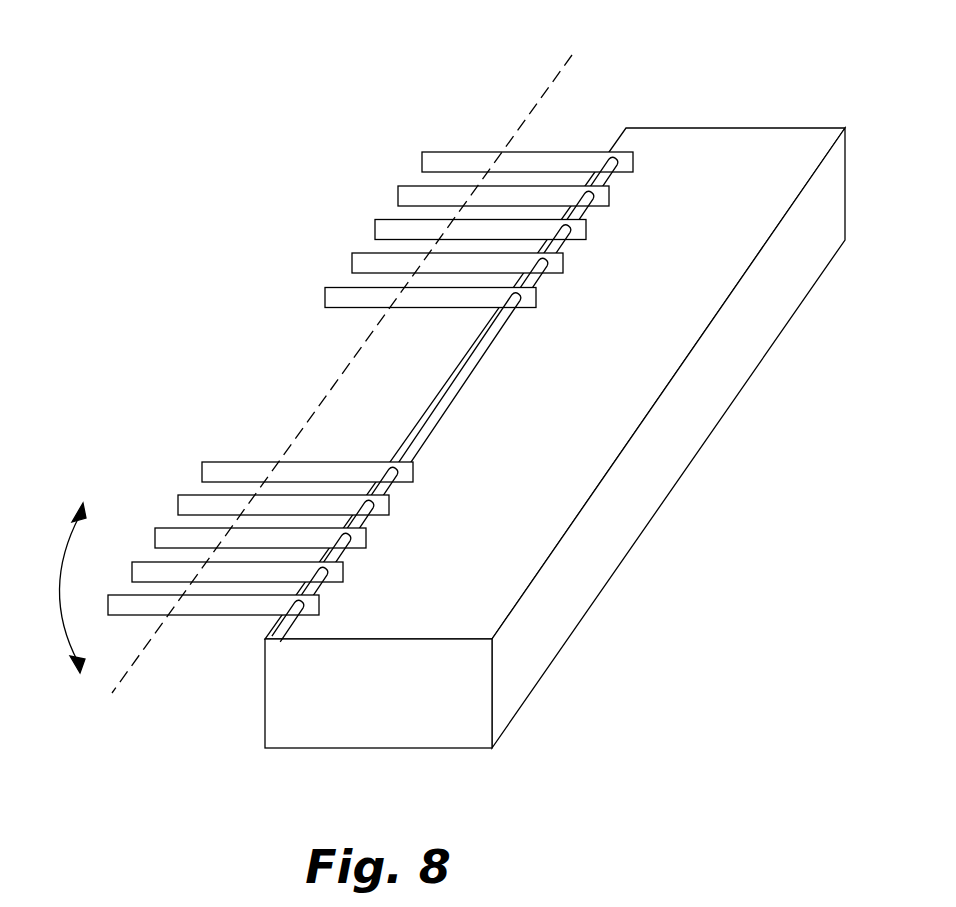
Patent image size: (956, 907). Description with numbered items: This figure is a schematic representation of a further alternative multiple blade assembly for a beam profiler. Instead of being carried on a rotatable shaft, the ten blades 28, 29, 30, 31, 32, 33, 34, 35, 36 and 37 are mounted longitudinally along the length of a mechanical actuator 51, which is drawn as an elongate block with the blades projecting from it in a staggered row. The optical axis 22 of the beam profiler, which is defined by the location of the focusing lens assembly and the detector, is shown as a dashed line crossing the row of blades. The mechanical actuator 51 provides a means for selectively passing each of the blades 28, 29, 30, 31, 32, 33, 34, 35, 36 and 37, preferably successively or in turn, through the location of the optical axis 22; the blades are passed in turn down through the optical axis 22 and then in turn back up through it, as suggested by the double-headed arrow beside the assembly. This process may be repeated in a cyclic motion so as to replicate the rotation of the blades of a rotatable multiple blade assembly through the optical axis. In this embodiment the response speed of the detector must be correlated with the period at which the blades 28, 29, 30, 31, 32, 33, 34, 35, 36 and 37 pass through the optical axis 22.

The optical axis 22 is at (572, 55).
The blade 28 is at (222, 610).
The blade 29 is at (135, 573).
The blade 30 is at (162, 542).
The blade 31 is at (185, 508).
The blade 32 is at (205, 476).
The blade 33 is at (326, 297).
The blade 34 is at (353, 263).
The blade 35 is at (376, 230).
The blade 36 is at (400, 197).
The blade 37 is at (423, 162).
The mechanical actuator 51 is at (555, 438).